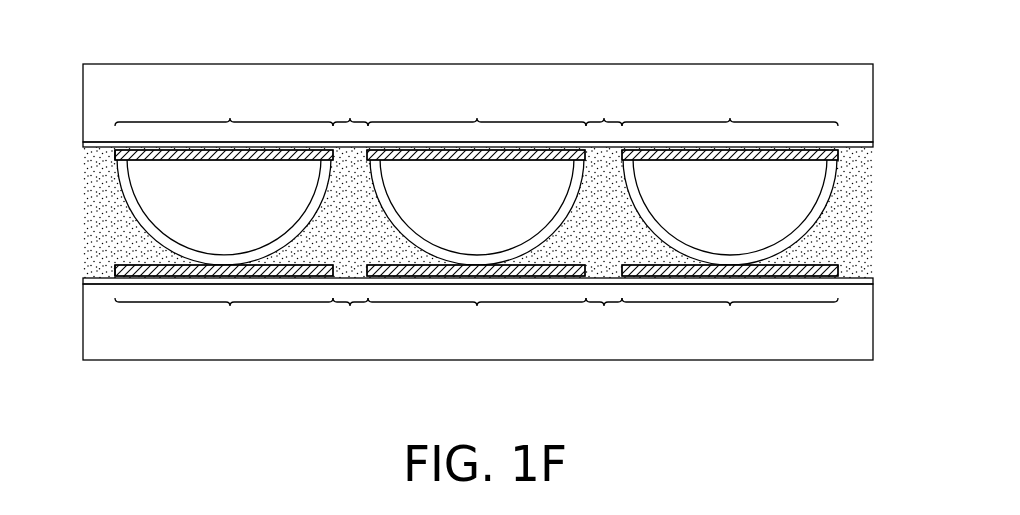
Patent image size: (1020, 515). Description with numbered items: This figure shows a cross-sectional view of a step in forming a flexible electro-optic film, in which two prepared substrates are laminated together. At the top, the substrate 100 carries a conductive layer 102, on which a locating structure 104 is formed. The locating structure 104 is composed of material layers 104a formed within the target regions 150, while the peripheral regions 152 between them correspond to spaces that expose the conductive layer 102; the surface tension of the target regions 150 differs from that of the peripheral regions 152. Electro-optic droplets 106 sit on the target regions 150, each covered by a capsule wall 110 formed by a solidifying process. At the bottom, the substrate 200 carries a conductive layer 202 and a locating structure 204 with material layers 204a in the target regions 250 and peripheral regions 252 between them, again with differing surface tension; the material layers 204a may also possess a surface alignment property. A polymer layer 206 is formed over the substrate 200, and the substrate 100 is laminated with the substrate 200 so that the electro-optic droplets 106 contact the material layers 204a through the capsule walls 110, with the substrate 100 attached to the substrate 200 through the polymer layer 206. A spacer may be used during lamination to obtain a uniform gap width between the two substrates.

The substrate 100 is at (860, 91).
The conductive layer 102 is at (860, 143).
The locating structure 104 is at (785, 151).
The material layer 104a is at (115, 158).
The electro-optic droplet 106 is at (675, 172).
The capsule wall 110 is at (830, 178).
The target region 150 is at (476, 105).
The peripheral region 152 is at (477, 105).
The substrate 200 is at (862, 328).
The conductive layer 202 is at (858, 283).
The locating structure 204 is at (848, 272).
The material layer 204a is at (136, 266).
The polymer layer 206 is at (862, 213).
The target region 250 is at (476, 320).
The peripheral region 252 is at (477, 320).